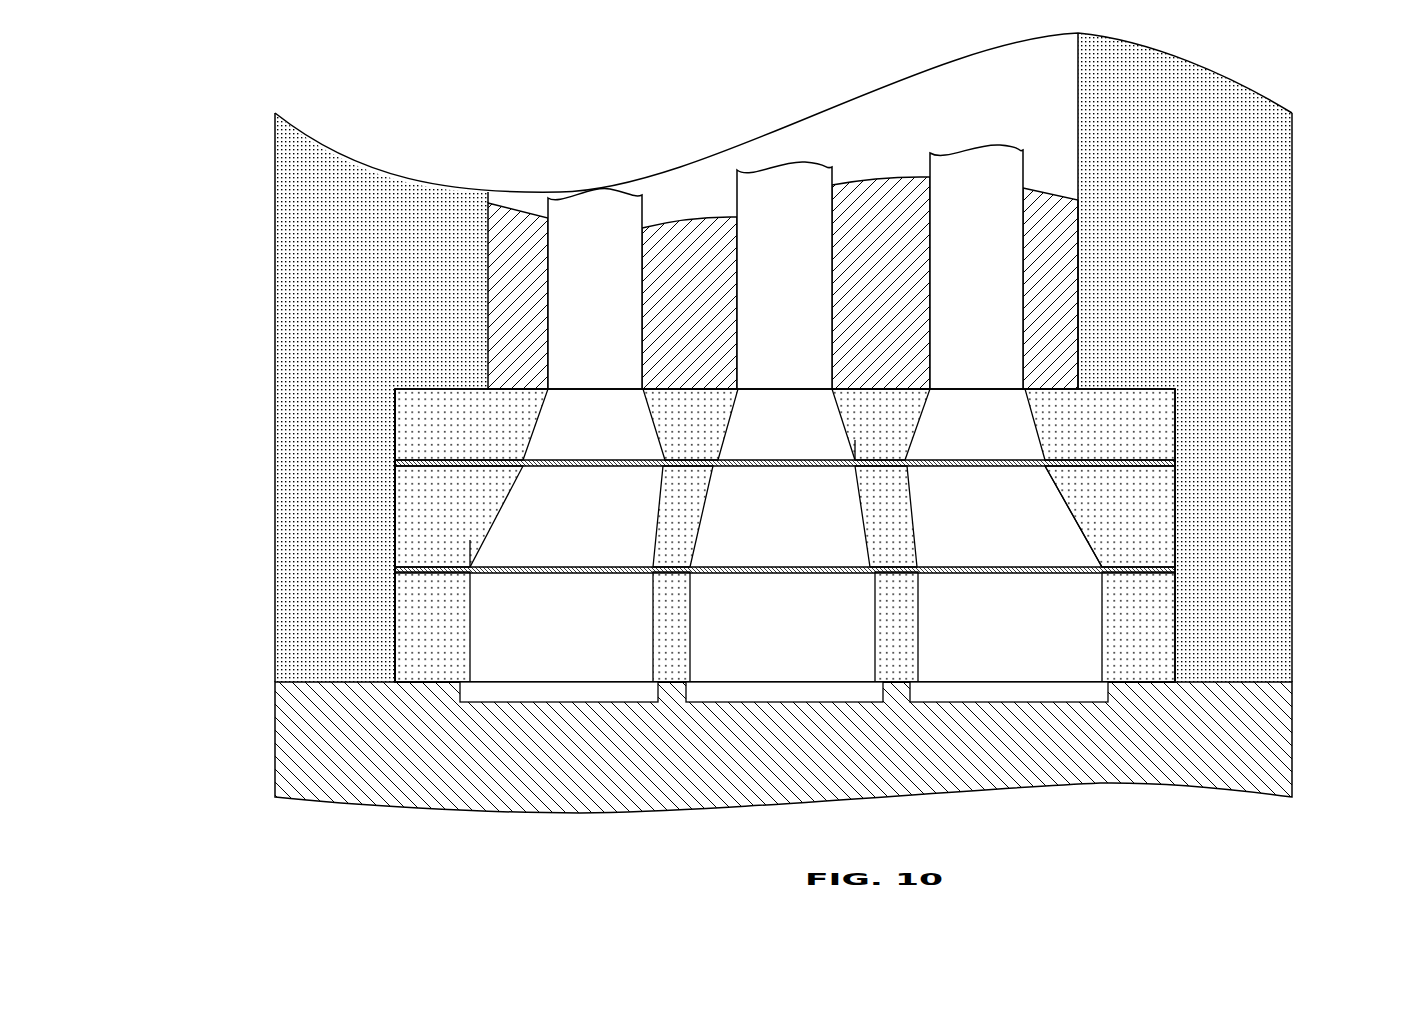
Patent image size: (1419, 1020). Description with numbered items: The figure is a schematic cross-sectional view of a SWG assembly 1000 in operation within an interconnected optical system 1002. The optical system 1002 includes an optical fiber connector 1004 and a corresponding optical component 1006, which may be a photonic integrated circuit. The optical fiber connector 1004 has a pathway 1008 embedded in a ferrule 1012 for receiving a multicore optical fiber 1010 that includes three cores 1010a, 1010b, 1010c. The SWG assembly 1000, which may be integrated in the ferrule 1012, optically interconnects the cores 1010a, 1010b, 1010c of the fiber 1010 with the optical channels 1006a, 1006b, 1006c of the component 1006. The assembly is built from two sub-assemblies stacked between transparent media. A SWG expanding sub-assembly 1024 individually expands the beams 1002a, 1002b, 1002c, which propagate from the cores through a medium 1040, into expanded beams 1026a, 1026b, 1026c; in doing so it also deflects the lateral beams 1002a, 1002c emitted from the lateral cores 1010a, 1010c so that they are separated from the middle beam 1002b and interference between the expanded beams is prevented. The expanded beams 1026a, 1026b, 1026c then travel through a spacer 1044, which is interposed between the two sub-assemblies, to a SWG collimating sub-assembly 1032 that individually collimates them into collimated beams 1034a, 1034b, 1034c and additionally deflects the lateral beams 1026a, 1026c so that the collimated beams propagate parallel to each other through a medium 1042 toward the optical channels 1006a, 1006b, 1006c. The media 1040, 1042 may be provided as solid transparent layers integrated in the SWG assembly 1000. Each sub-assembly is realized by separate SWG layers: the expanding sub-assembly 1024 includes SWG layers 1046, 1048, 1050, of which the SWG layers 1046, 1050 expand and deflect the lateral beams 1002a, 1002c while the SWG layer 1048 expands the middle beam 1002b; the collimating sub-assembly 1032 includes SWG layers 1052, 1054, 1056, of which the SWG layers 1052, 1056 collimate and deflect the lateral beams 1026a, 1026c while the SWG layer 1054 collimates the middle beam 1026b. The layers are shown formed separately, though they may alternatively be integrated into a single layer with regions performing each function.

The SWG assembly 1000 is at (1175, 427).
The interconnected optical system 1002 is at (212, 677).
The beam 1002a is at (648, 408).
The middle beam 1002b is at (835, 398).
The beam 1002c is at (1028, 403).
The optical fiber connector 1004 is at (830, 357).
The corresponding optical component 1006 is at (818, 768).
The optical channel 1006a is at (570, 695).
The optical channel 1006b is at (710, 697).
The optical channel 1006c is at (1085, 690).
The pathway 1008 is at (1078, 198).
The multicore optical fiber 1010 is at (498, 267).
The core 1010a is at (577, 205).
The core 1010b is at (737, 183).
The core 1010c is at (1047, 172).
The ferrule 1012 is at (1280, 317).
The SWG expanding sub-assembly 1024 is at (386, 462).
The beam 1026a is at (508, 482).
The middle beam 1026b is at (880, 505).
The beam 1026c is at (1080, 522).
The SWG collimating sub-assembly 1032 is at (741, 545).
The collimated beam 1034a is at (468, 614).
The collimated beam 1034b is at (690, 600).
The collimated beam 1034c is at (1105, 607).
The medium 1040 is at (471, 424).
The medium 1042 is at (432, 627).
The spacer 1044 is at (459, 516).
The SWG layer 1046 is at (520, 455).
The SWG layer 1048 is at (856, 453).
The SWG layer 1050 is at (1062, 468).
The SWG layer 1052 is at (466, 562).
The SWG layer 1054 is at (750, 564).
The SWG layer 1056 is at (905, 567).